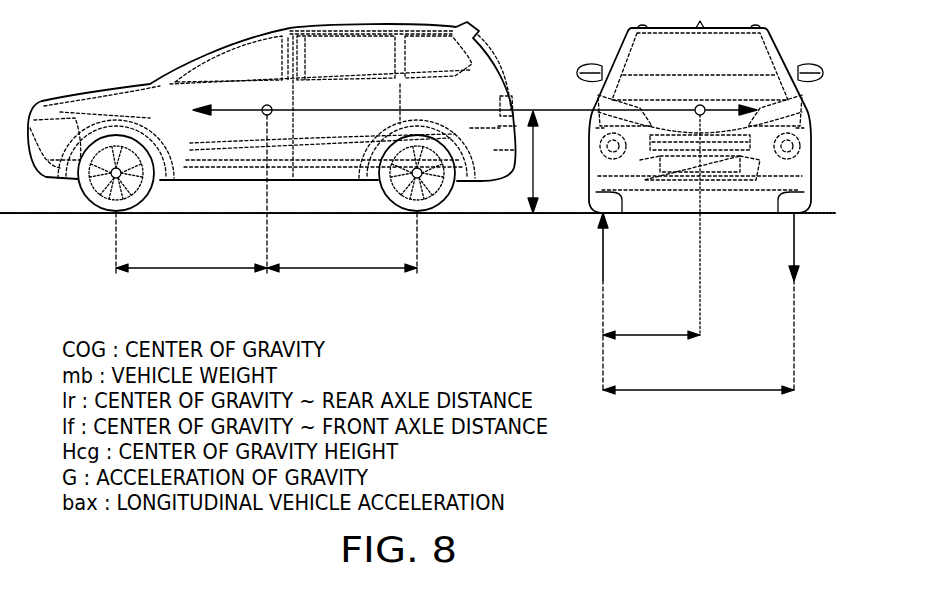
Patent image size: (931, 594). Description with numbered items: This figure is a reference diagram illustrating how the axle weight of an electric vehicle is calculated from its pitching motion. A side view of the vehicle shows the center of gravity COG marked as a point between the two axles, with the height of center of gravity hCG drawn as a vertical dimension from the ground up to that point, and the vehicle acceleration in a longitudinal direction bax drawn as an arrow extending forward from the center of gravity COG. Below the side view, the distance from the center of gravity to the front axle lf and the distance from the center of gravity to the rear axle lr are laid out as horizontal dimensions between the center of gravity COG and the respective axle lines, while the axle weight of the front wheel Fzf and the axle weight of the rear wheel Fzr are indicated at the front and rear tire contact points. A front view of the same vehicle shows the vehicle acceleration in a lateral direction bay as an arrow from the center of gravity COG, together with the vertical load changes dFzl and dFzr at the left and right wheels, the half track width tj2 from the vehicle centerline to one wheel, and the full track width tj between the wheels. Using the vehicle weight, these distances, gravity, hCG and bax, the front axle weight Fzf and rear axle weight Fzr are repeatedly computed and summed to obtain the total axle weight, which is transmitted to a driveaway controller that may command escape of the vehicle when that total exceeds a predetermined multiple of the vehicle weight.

The center of gravity COG is at (266, 96).
The height of center of gravity hCG is at (551, 162).
The vehicle acceleration in a longitudinal direction bax is at (453, 104).
The vehicle acceleration in a lateral direction bay is at (771, 104).
The distance from a center of gravity to the front axle lf is at (191, 256).
The distance from a center of gravity to the rear axle lr is at (342, 256).
The axle weight of the front wheel Fzf is at (88, 233).
The axle weight of the rear wheel Fzr is at (389, 233).
The left wheel vertical load change dFzl is at (565, 246).
The right wheel vertical load change dFzr is at (758, 247).
The half track width tj2 is at (651, 317).
The track width tj is at (698, 373).